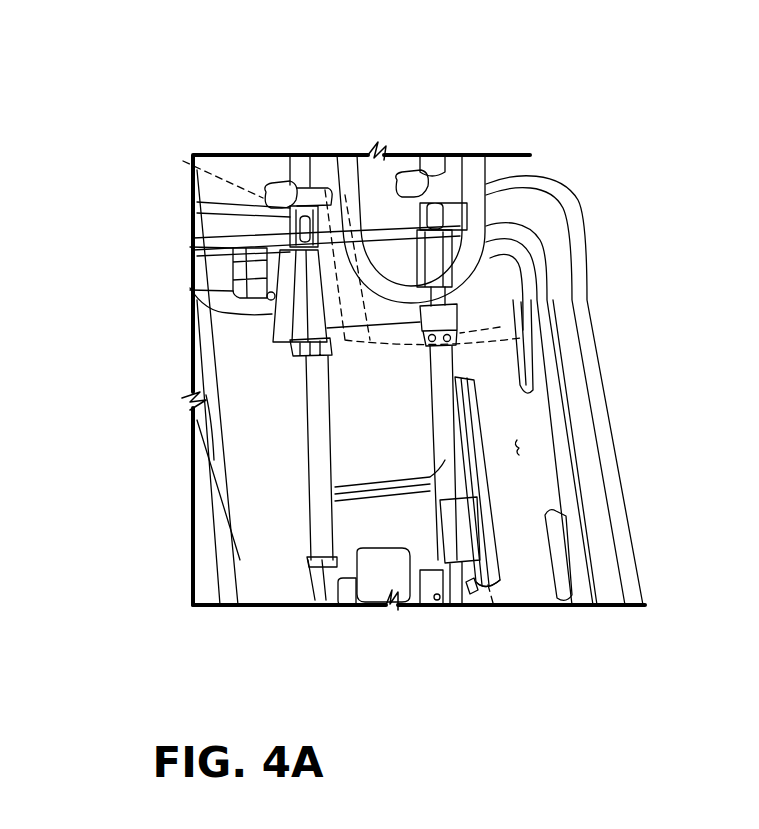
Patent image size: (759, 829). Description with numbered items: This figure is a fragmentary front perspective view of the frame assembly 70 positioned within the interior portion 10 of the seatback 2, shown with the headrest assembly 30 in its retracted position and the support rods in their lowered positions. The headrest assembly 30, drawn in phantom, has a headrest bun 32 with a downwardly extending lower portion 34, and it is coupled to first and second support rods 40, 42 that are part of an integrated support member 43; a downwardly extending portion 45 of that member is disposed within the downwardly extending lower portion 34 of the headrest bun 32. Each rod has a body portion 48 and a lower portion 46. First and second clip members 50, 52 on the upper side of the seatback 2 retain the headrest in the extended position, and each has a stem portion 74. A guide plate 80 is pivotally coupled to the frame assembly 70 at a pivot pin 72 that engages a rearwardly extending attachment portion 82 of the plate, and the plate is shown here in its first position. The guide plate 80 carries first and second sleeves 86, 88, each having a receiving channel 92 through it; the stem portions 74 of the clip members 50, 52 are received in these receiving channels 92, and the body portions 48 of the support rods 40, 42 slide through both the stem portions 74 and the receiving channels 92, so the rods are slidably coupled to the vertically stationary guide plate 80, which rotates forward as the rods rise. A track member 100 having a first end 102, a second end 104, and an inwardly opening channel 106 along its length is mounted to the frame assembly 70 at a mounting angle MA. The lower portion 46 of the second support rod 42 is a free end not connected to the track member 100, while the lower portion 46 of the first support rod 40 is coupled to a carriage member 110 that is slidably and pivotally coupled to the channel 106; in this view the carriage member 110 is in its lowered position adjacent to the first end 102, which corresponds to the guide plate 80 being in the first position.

The seatback 2 is at (603, 305).
The interior portion 10 is at (521, 447).
The headrest assembly 30 is at (187, 150).
The headrest bun 32 is at (528, 167).
The downwardly extending lower portion 34 is at (490, 372).
The first support rod 40 is at (420, 540).
The second support rod 42 is at (282, 398).
The integrated support member 43 is at (497, 200).
The downwardly extending portion 45 is at (437, 297).
The lower portion 46 is at (320, 565).
The body portion 48 is at (317, 413).
The first clip member 50 is at (398, 162).
The second clip member 52 is at (256, 177).
The frame assembly 70 is at (550, 240).
The pivot pin 72 is at (292, 247).
The stem portion 74 is at (488, 170).
The guide plate 80 is at (268, 323).
The rearwardly extending attachment portion 82 is at (237, 303).
The first sleeve 86 is at (487, 228).
The second sleeve 88 is at (280, 340).
The receiving channel 92 is at (265, 222).
The track member 100 is at (500, 488).
The first end 102 is at (484, 582).
The second end 104 is at (482, 377).
The channel 106 is at (476, 590).
The carriage member 110 is at (432, 463).
The mounting angle MA is at (493, 603).